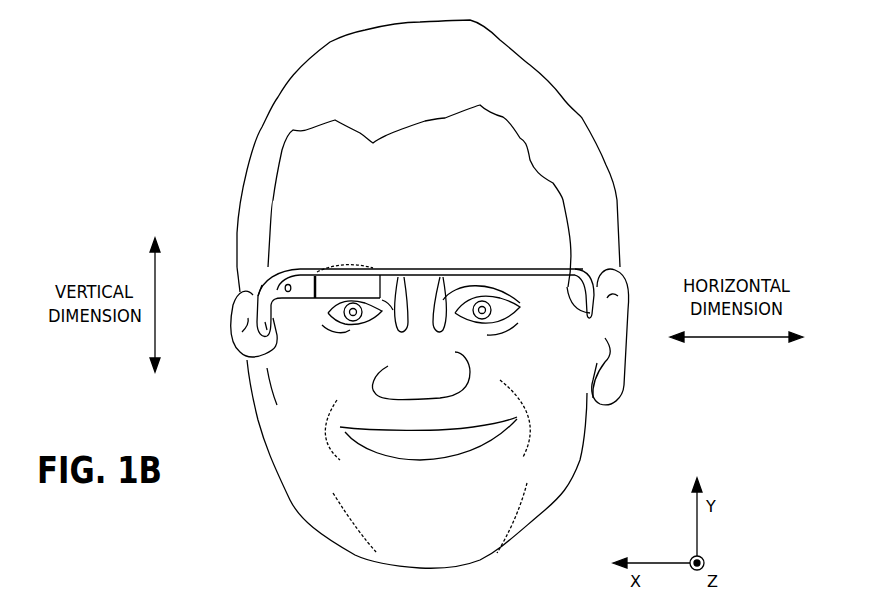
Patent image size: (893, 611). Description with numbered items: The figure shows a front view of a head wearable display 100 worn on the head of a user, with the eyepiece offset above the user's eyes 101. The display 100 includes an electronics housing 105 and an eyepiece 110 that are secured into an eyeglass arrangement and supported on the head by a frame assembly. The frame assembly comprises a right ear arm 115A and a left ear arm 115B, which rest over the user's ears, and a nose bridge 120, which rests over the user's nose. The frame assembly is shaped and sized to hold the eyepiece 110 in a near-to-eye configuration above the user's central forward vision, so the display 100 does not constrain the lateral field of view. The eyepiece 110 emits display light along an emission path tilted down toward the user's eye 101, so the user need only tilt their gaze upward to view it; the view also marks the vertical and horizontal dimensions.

The head wearable display 100 is at (278, 232).
The user's eye 101 is at (439, 78).
The electronics housing 105 is at (272, 300).
The eyepiece 110 is at (373, 288).
The right ear arm 115A is at (262, 285).
The left ear arm 115B is at (592, 282).
The nose bridge 120 is at (398, 330).